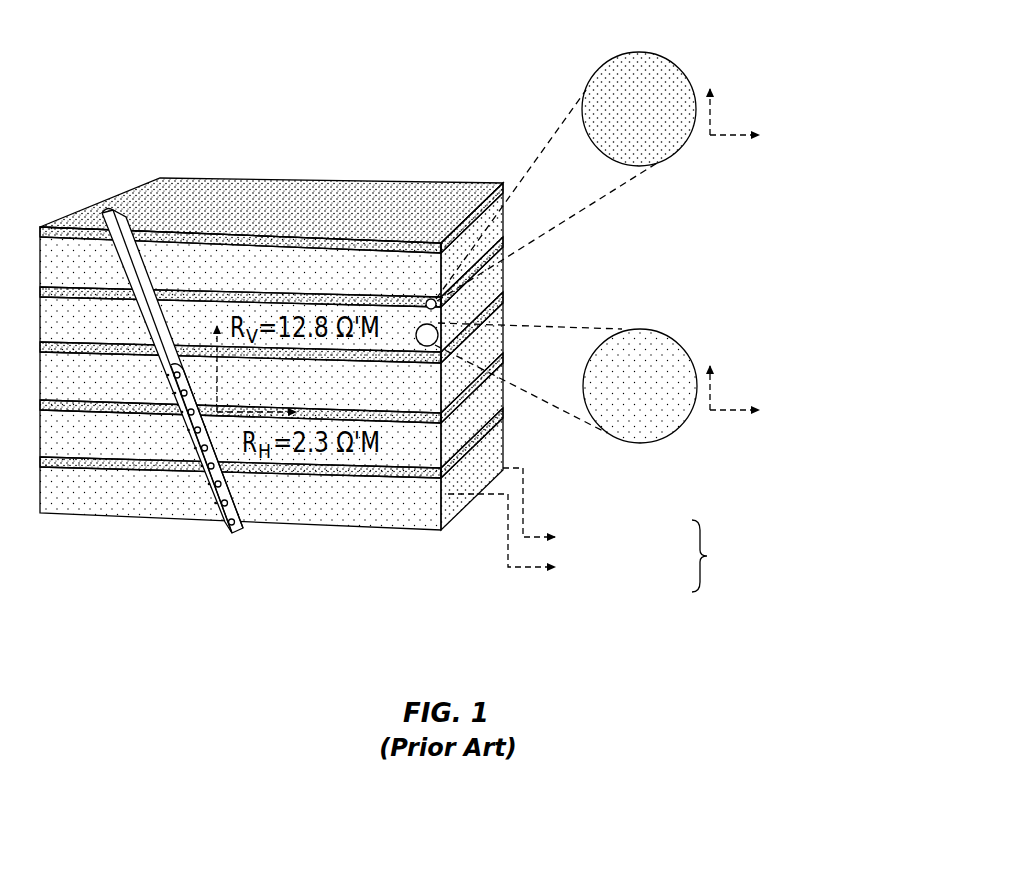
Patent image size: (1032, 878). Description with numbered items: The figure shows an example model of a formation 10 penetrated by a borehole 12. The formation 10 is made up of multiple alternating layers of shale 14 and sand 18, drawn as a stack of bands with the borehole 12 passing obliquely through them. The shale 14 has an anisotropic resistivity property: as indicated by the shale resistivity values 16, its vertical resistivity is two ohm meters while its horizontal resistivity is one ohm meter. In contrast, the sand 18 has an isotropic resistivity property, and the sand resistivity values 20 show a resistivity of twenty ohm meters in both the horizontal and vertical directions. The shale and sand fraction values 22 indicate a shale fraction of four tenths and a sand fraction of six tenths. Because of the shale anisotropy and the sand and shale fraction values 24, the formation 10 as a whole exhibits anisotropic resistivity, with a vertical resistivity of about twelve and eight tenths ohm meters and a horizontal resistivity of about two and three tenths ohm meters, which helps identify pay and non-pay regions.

The formation 10 is at (320, 158).
The borehole 12 is at (124, 214).
The shale 14 is at (639, 52).
The shale resistivity values 16 is at (754, 80).
The sand 18 is at (641, 443).
The sand resistivity values 20 is at (754, 360).
The shale and sand fraction values 22 is at (614, 605).
The sand and shale fraction values 24 is at (293, 460).